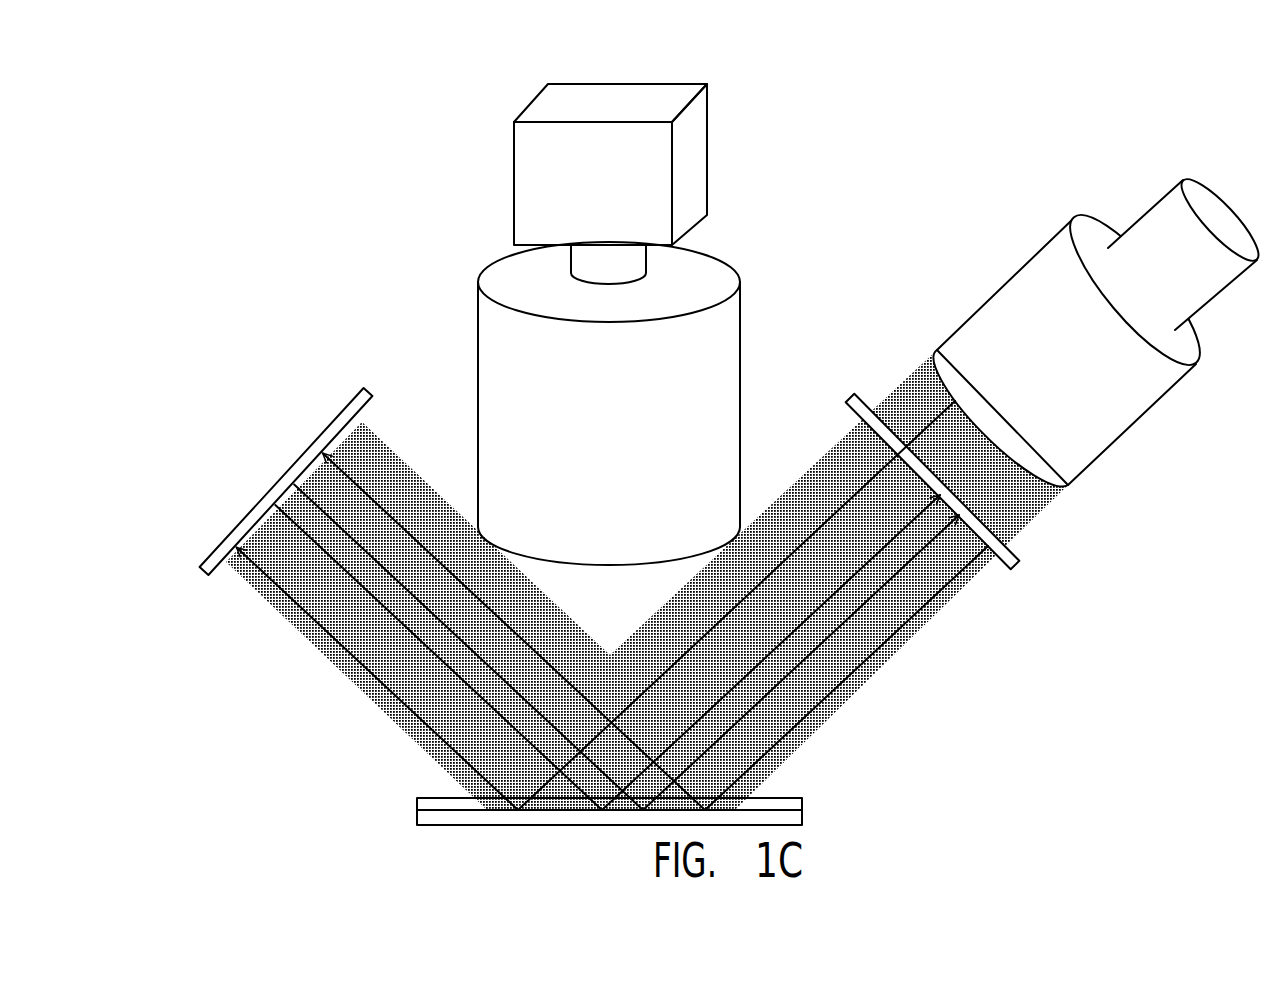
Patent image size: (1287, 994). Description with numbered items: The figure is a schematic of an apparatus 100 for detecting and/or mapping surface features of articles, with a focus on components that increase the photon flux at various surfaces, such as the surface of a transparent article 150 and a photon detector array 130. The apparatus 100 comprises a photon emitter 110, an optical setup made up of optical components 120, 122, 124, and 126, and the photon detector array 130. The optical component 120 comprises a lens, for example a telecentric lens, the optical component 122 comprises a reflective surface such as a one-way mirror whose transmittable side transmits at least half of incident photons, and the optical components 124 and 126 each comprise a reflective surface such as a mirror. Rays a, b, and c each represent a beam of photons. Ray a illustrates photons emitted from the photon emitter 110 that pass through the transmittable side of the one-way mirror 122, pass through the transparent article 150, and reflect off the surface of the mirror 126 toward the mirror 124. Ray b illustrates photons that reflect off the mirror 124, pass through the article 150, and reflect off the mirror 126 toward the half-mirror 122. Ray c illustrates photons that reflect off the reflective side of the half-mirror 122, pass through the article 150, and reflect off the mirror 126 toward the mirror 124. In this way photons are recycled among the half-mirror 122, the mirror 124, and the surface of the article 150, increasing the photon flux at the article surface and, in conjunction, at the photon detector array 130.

The apparatus 100 is at (237, 217).
The photon emitter 110 is at (1027, 317).
The optical component (lens) 120 is at (527, 397).
The photon detector array 130 is at (565, 152).
The optical component (one-way mirror) 122 is at (1007, 555).
The optical component (mirror) 124 is at (213, 562).
The optical component (mirror) 126 is at (433, 822).
The article 150 is at (787, 805).
The ray a is at (596, 605).
The ray b is at (617, 648).
The ray c is at (655, 631).